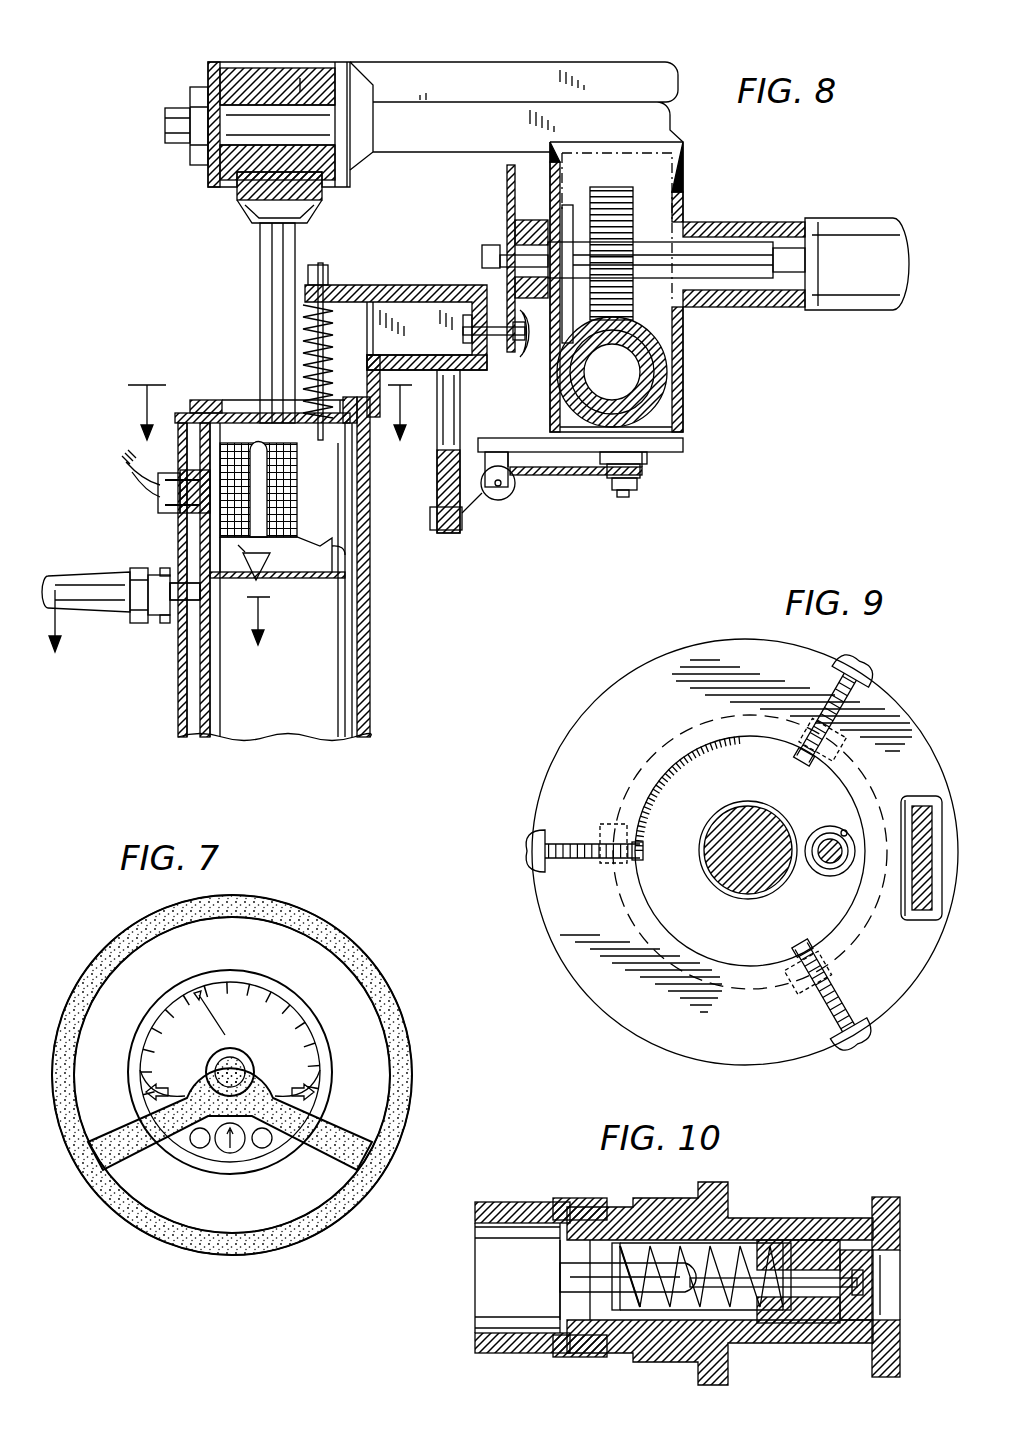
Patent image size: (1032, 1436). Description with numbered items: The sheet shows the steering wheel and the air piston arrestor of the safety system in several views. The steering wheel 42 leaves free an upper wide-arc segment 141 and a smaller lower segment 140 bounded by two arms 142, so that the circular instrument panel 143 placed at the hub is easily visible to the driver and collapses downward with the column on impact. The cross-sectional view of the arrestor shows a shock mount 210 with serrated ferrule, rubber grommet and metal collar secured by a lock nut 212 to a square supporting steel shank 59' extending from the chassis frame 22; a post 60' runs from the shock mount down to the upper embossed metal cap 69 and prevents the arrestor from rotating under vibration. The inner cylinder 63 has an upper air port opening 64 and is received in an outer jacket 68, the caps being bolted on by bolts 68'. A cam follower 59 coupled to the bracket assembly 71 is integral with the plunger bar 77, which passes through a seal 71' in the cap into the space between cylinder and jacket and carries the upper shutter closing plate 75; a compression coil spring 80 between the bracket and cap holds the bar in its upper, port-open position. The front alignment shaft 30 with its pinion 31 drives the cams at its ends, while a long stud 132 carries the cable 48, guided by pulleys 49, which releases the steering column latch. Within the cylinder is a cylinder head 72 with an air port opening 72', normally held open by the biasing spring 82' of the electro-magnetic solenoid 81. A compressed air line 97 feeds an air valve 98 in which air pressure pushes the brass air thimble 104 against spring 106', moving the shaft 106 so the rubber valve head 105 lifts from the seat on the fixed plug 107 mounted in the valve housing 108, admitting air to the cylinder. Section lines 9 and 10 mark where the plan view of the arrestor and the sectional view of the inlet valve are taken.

In FIG. 8, the shock mount 210 is at (242, 58).
In FIG. 8, the lock nut 212 is at (190, 90).
In FIG. 8, the supporting steel shank 59' is at (491, 100).
In FIG. 8, the post 60' is at (258, 323).
In FIG. 9, the post 60' is at (748, 833).
In FIG. 8, the bracket assembly 71 is at (396, 341).
In FIG. 8, the compression coil spring 80 is at (335, 361).
In FIG. 9, the compression coil spring 80 is at (832, 878).
In FIG. 8, the seal 71' is at (415, 370).
In FIG. 9, the seal 71' is at (901, 842).
In FIG. 8, the cam follower 59 is at (498, 361).
In FIG. 8, the chassis frame 22 is at (686, 410).
In FIG. 8, the pinion 31 is at (624, 196).
In FIG. 8, the front alignment shaft 30 is at (657, 242).
In FIG. 8, the long stud 132 is at (437, 452).
In FIG. 8, the cable 48 is at (572, 476).
In FIG. 8, the pulleys 49 is at (500, 500).
In FIG. 8, the upper metal cap 69 is at (185, 402).
In FIG. 9, the upper metal cap 69 is at (578, 776).
In FIG. 8, the bolts 68' is at (166, 423).
In FIG. 9, the bolts 68' is at (700, 859).
In FIG. 8, the outer jacket 68 is at (302, 569).
In FIG. 10, the outer jacket 68 is at (713, 1277).
In FIG. 8, the upper shutter closing plate 75 is at (357, 515).
In FIG. 8, the inner cylinder 63 is at (353, 640).
In FIG. 10, the inner cylinder 63 is at (900, 1215).
In FIG. 8, the plunger bar 77 is at (370, 688).
In FIG. 9, the plunger bar 77 is at (921, 912).
In FIG. 8, the electro-magnetic solenoid 81 is at (282, 505).
In FIG. 8, the biasing spring 82' is at (276, 558).
In FIG. 8, the air port opening 64 is at (350, 550).
In FIG. 8, the cylinder head 72 is at (321, 585).
In FIG. 8, the air port opening 72' is at (244, 585).
In FIG. 8, the compressed air line 97 is at (99, 575).
In FIG. 10, the compressed air line 97 is at (512, 1207).
In FIG. 8, the air valve 98 is at (168, 639).
In FIG. 10, the air valve 98 is at (794, 1212).
In FIG. 8, the section line 9- 9 is at (271, 419).
In FIG. 8, the section line 10- 10 is at (169, 635).
In FIG. 7, the lower segment 140 is at (297, 1207).
In FIG. 7, the upper wide-arc segment 141 is at (335, 958).
In FIG. 7, the arms 142 is at (346, 1142).
In FIG. 7, the circular instrument panel 143 is at (296, 991).
In FIG. 7, the steering wheel 42 is at (410, 1046).
In FIG. 10, the fixed plug 107 is at (813, 1253).
In FIG. 10, the valve housing 108 is at (813, 1340).
In FIG. 10, the rubber valve head 105 is at (885, 1262).
In FIG. 10, the brass air thimble 104 is at (613, 1302).
In FIG. 10, the shaft 106 is at (701, 1310).
In FIG. 10, the spring 106' is at (638, 1316).